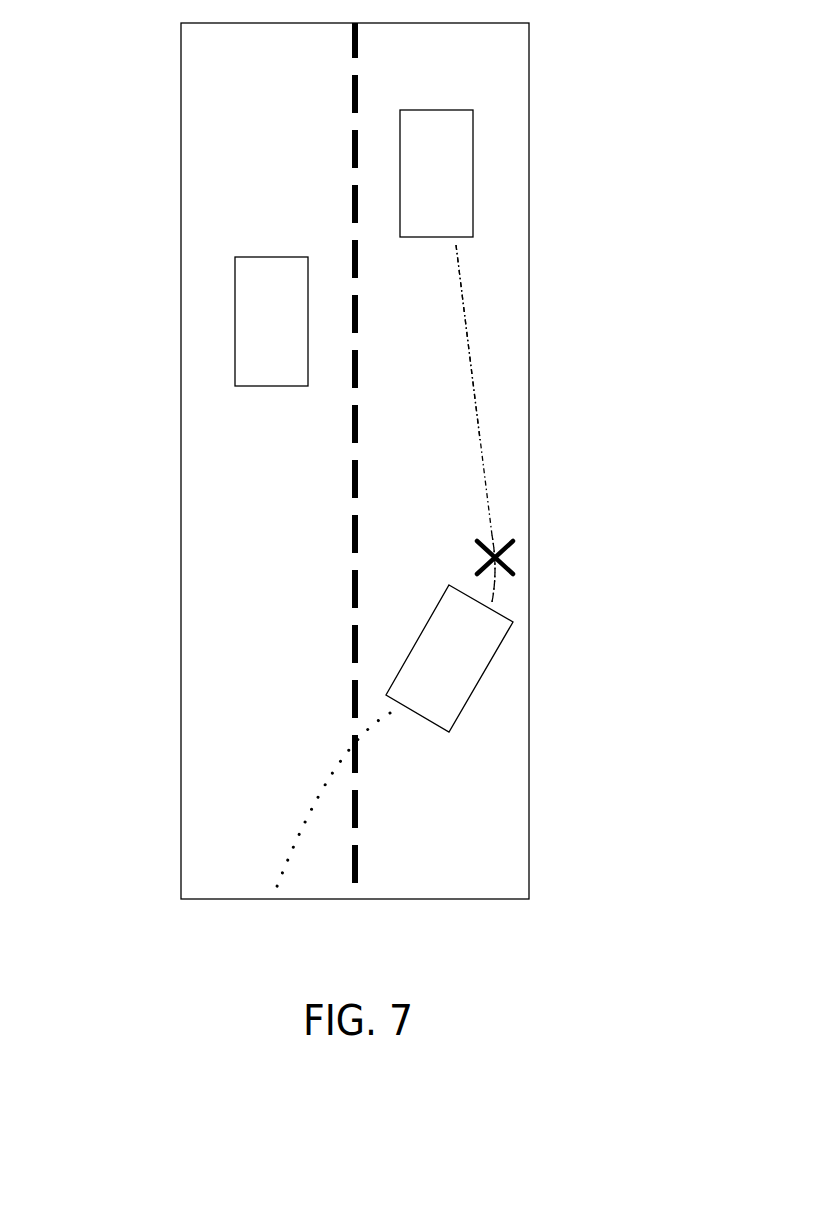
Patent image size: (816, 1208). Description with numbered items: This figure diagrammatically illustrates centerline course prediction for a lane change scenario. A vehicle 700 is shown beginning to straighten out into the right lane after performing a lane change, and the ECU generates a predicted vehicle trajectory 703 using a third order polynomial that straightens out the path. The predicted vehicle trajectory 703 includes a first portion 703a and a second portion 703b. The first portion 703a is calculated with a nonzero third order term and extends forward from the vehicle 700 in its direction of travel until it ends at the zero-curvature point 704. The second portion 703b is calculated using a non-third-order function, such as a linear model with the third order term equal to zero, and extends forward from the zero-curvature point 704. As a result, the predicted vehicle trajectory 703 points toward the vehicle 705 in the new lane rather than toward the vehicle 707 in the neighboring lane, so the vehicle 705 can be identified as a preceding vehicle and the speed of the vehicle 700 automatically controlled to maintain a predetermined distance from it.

The vehicle 700 is at (463, 703).
The predicted vehicle trajectory 703 is at (505, 450).
The first portion 703a is at (505, 598).
The second portion 703b is at (472, 345).
The zero-curvature point 704 is at (497, 556).
The vehicle 705 is at (473, 182).
The vehicle 707 is at (237, 319).